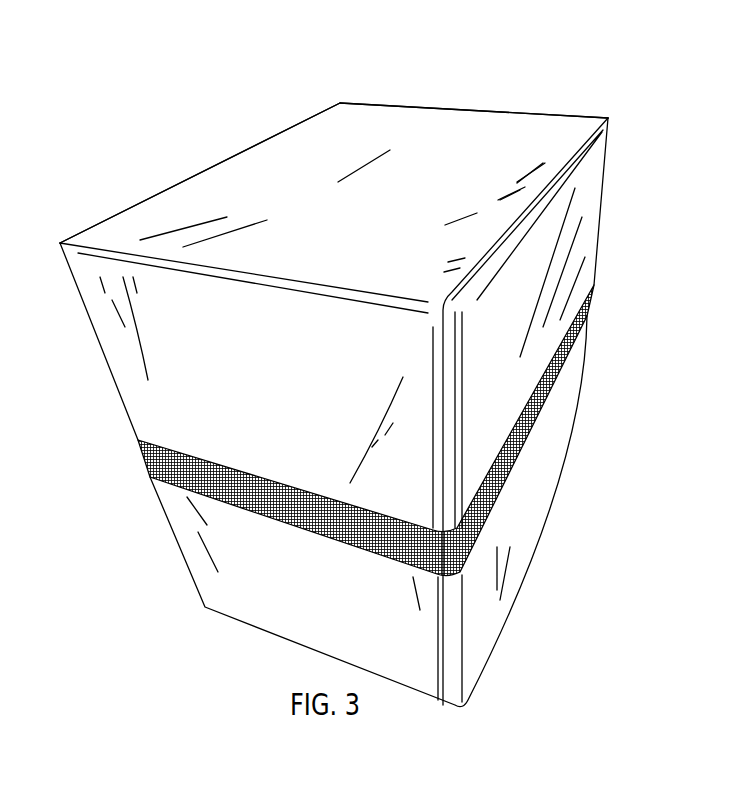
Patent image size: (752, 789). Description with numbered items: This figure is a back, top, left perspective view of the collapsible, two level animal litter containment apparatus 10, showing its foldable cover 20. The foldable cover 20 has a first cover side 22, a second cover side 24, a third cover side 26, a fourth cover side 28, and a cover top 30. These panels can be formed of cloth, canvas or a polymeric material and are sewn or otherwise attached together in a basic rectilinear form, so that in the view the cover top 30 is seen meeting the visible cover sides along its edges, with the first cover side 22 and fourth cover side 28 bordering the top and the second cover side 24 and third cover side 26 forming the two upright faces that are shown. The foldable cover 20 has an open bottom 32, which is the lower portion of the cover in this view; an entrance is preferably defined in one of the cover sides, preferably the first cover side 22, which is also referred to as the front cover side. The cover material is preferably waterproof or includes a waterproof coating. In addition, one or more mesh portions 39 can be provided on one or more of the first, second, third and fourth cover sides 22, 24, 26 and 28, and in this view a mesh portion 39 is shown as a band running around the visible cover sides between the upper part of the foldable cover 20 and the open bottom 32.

The cover assembly 10 is at (561, 42).
The foldable cover 20 is at (571, 108).
The first cover side 22 is at (497, 104).
The second cover side 24 is at (523, 333).
The third cover side 26 is at (303, 385).
The fourth cover side 28 is at (270, 129).
The cover top 30 is at (404, 206).
The open bottom 32 is at (508, 623).
The mesh portion 39 is at (205, 478).